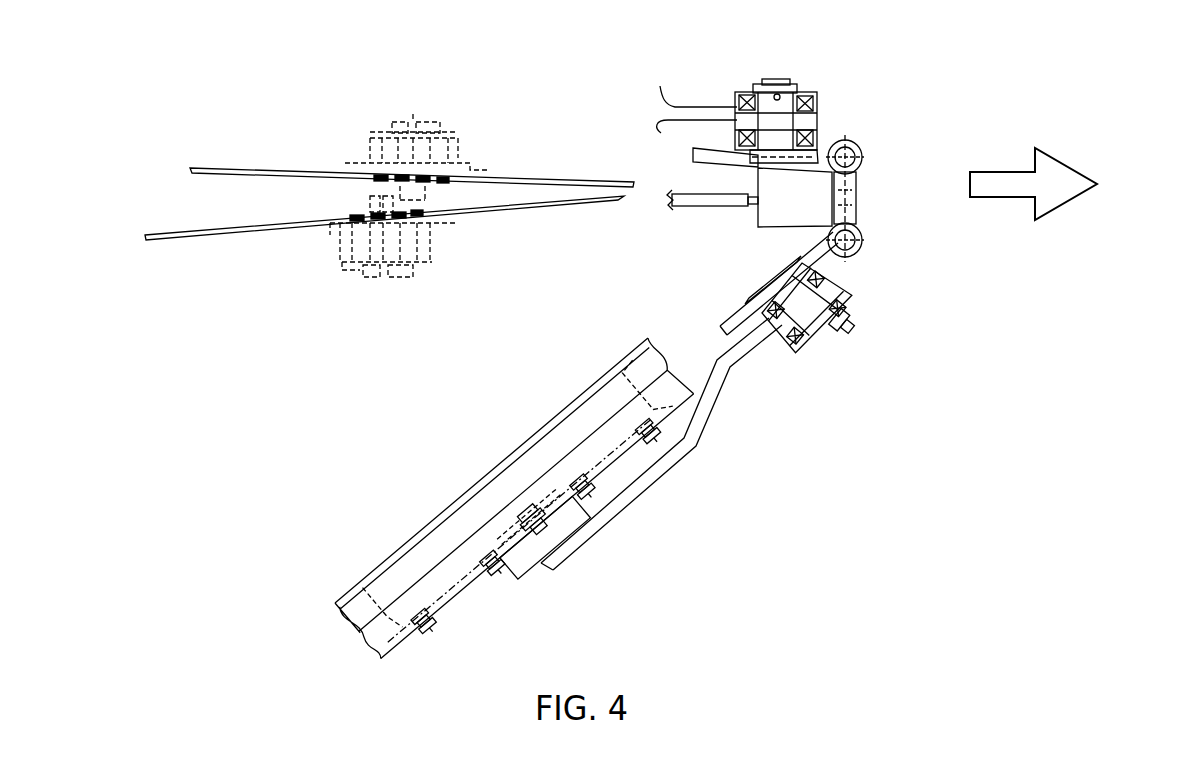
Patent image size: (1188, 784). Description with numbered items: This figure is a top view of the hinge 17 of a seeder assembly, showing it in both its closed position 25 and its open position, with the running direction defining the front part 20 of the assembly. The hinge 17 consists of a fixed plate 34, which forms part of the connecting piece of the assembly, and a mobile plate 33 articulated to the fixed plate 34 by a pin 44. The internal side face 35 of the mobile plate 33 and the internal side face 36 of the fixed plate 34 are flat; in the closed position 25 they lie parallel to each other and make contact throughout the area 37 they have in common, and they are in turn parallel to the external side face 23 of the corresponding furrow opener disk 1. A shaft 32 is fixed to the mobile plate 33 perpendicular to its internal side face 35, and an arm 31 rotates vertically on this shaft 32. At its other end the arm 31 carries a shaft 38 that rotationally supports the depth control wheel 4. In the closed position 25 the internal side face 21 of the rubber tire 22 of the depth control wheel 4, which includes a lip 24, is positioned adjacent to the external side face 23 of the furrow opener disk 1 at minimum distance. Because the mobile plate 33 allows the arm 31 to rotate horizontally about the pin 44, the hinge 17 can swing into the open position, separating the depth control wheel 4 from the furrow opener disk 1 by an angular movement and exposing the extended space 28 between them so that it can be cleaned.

The furrow opener disk 1 is at (187, 168).
The depth control wheel 4 is at (527, 583).
The hinge 17 is at (866, 170).
The front part/forward portion 20 is at (1078, 208).
The internal side face 21 is at (859, 257).
The rubber tire 22 is at (392, 627).
The external side face 23 is at (312, 170).
The lip 24 is at (426, 521).
The closed position 25 is at (703, 169).
The extended space 28 is at (325, 362).
The arm 31 is at (696, 448).
The shaft/pin 32 is at (837, 338).
The mobile plate 33 is at (719, 320).
The fixed plate 34 is at (756, 221).
The internal side face 35 is at (747, 291).
The internal side face 36 is at (776, 231).
The common contact area 37 is at (819, 154).
The shaft 38 is at (573, 561).
The pin 44 is at (859, 148).